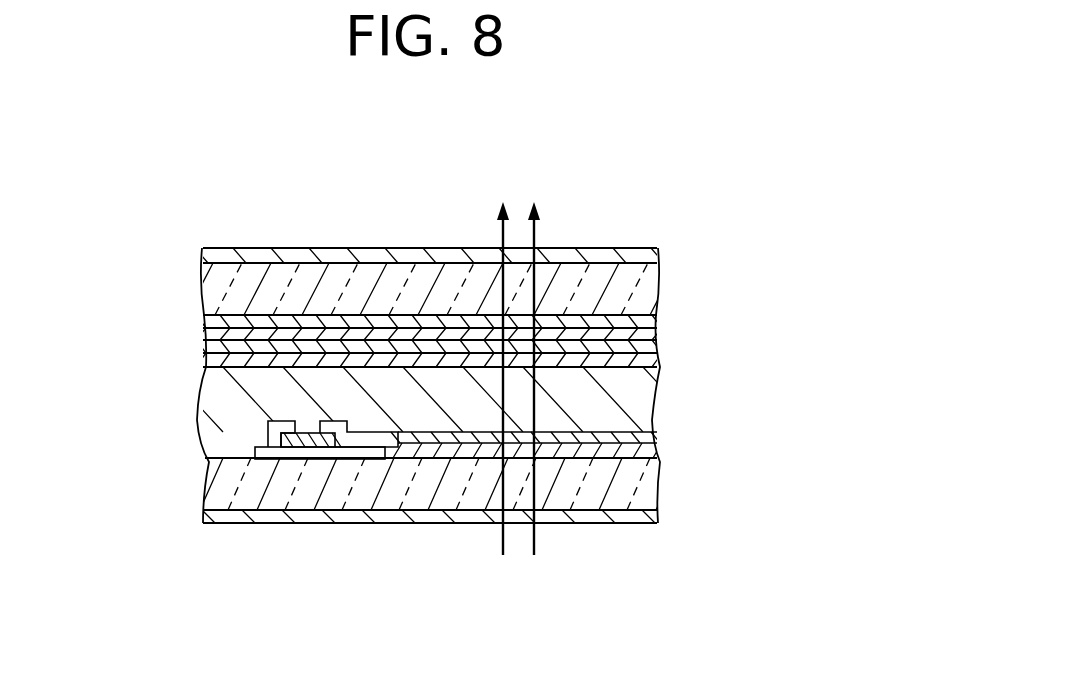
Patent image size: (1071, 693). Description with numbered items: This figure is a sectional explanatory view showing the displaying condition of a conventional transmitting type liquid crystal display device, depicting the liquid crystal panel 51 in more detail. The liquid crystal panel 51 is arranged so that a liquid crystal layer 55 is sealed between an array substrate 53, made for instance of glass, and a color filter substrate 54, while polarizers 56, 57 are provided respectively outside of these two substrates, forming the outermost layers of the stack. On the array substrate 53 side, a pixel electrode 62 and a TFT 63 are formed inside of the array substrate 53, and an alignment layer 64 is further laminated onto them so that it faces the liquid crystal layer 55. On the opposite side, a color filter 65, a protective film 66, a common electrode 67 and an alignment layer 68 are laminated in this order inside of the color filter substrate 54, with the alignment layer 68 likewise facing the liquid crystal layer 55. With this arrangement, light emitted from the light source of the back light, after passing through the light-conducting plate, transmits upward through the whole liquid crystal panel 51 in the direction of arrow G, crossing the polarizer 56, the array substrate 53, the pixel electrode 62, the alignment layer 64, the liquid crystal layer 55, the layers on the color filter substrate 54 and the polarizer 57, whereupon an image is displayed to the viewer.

The liquid crystal panel 51 is at (243, 216).
The array substrate 53 is at (235, 495).
The color filter substrate 54 is at (235, 294).
The liquid crystal layer 55 is at (252, 430).
The polarizer 56 is at (622, 515).
The polarizer 57 is at (623, 257).
The pixel electrode 62 is at (622, 450).
The TFT 63 is at (248, 408).
The alignment layer 64 is at (633, 438).
The color filter 65 is at (648, 317).
The protective film 66 is at (643, 332).
The common electrode 67 is at (648, 345).
The alignment layer 68 is at (613, 373).
The arrow G is at (500, 237).